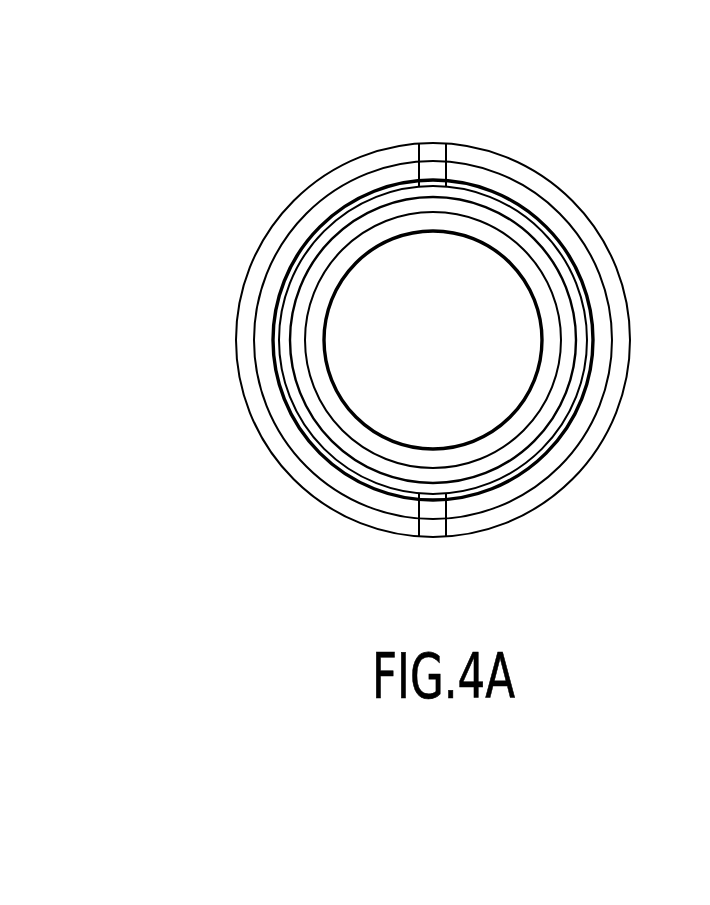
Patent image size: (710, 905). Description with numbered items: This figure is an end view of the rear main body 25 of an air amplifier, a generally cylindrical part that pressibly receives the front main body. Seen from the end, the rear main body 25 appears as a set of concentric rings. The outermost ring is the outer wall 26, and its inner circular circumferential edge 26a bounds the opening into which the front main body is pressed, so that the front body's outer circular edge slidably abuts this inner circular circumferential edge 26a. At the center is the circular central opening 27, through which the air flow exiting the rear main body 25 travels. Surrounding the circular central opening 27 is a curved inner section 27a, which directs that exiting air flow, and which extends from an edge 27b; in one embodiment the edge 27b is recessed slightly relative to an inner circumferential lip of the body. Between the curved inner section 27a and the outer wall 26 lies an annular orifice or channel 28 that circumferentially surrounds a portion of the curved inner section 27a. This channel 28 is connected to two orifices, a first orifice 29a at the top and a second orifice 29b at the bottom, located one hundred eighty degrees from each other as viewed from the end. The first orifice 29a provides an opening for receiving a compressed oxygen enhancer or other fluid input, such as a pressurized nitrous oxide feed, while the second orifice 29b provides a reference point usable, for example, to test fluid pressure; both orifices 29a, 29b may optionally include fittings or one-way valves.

The rear main body 25 is at (232, 223).
The outer wall 26 is at (303, 452).
The inner circular circumferential edge 26a is at (348, 205).
The circular central opening 27 is at (448, 359).
The curved inner section 27a is at (538, 287).
The edge 27b is at (565, 370).
The annular orifice or channel 28 is at (583, 335).
The first orifice 29a is at (432, 140).
The second orifice 29b is at (433, 538).